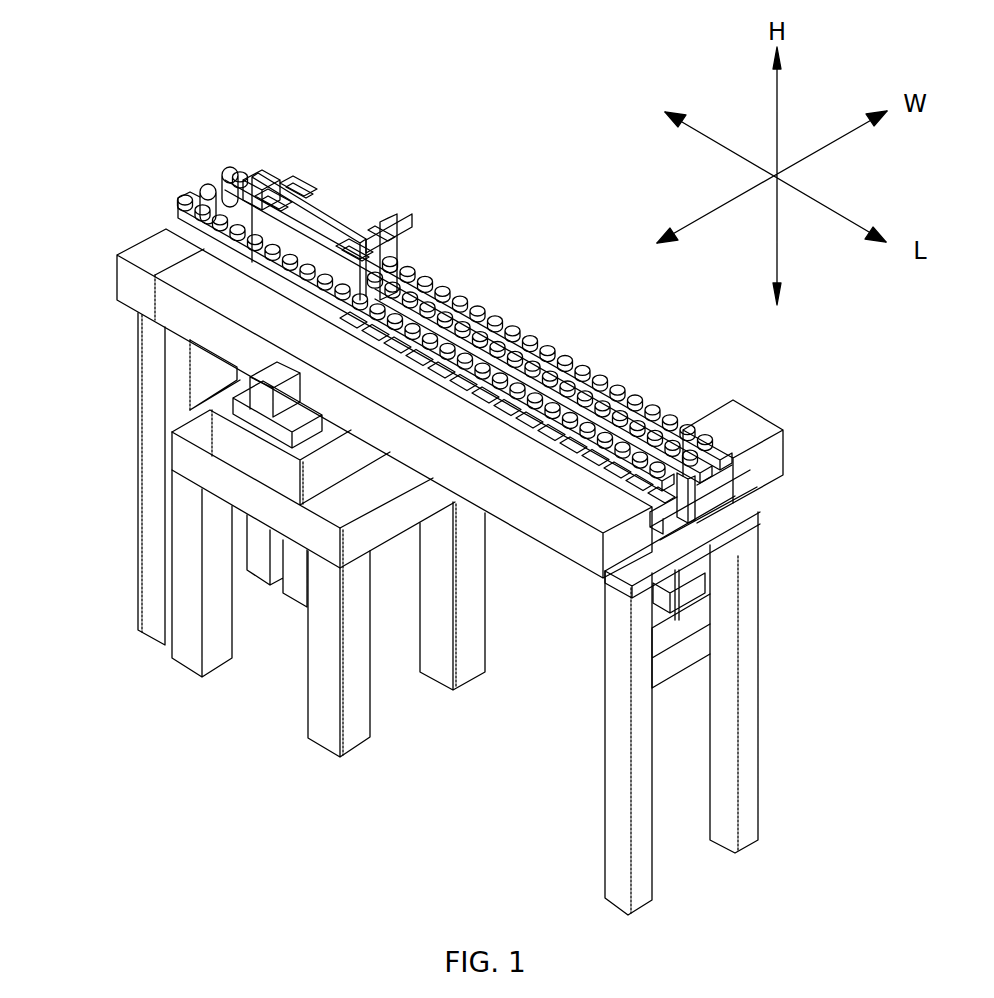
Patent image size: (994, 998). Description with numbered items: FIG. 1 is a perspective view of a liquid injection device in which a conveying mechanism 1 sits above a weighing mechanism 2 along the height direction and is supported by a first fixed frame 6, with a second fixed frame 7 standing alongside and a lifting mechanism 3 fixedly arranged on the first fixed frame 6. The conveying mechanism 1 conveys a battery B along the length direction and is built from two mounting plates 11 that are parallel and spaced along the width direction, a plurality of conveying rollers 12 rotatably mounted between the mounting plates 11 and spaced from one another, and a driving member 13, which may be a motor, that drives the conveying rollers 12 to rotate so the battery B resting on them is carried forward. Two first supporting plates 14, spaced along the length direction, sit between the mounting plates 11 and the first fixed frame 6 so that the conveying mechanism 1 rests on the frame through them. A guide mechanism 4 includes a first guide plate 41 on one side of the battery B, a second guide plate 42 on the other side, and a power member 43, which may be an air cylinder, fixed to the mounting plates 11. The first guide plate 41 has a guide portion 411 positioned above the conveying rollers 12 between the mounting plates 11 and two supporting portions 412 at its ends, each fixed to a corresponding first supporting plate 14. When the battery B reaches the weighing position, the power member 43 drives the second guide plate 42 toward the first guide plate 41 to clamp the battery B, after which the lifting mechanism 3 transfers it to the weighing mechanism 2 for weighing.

The conveying mechanism 1 is at (205, 42).
The weighing mechanism 2 is at (230, 390).
The lifting mechanism 3 is at (697, 583).
The guide mechanism 4 is at (468, 186).
The first fixed frame 6 is at (153, 450).
The second fixed frame 7 is at (187, 548).
The mounting plate 11 is at (305, 173).
The conveying roller 12 is at (203, 190).
The driving member 13 is at (152, 250).
The first supporting plate 14 is at (660, 580).
The first guide plate 41 is at (773, 466).
The guide portion 411 is at (672, 443).
The supporting portion 412 is at (745, 502).
The second guide plate 42 is at (423, 283).
The power member 43 is at (388, 226).
The battery B is at (318, 186).